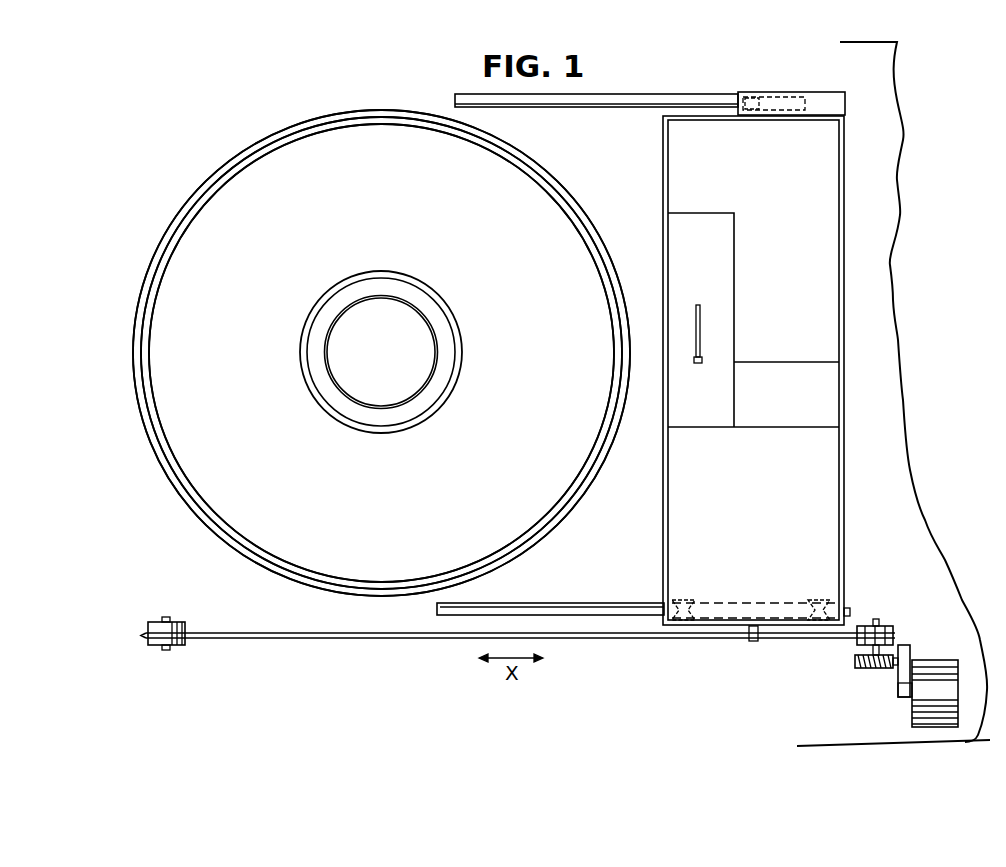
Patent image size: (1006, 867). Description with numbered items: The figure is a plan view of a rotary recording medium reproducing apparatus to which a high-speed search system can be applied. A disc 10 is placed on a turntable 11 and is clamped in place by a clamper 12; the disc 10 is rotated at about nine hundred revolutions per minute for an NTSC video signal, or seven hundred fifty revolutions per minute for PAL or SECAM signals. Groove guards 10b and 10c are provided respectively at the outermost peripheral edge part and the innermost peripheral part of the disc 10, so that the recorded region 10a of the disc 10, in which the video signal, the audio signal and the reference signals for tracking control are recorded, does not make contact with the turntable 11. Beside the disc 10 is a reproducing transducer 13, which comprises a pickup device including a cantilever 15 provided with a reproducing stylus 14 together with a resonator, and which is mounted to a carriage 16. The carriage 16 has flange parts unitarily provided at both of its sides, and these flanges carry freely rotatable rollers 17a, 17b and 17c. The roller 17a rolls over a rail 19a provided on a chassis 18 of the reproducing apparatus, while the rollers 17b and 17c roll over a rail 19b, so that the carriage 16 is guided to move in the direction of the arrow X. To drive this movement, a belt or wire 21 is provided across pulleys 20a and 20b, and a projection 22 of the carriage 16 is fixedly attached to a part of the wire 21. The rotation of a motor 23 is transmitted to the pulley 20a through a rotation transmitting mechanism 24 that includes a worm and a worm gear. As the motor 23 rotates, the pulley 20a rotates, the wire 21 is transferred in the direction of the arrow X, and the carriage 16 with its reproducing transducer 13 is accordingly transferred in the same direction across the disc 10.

The disc 10 is at (400, 110).
The recorded region 10a is at (264, 166).
The groove guard 10b is at (319, 128).
The groove guard 10c is at (343, 291).
The turntable 11 is at (198, 190).
The clamper 12 is at (337, 353).
The reproducing transducer 13 is at (700, 429).
The reproducing stylus 14 is at (698, 364).
The cantilever 15 is at (701, 329).
The carriage 16 is at (845, 500).
The roller 17a is at (752, 96).
The roller 17b is at (820, 620).
The roller 17c is at (682, 620).
The chassis 18 is at (883, 292).
The rail 19a is at (672, 93).
The rail 19b is at (620, 591).
The pulley 20a is at (881, 628).
The pulley 20b is at (185, 645).
The wire 21 is at (366, 640).
The projection 22 is at (753, 642).
The motor 23 is at (945, 660).
The rotation transmitting mechanism 24 is at (884, 674).